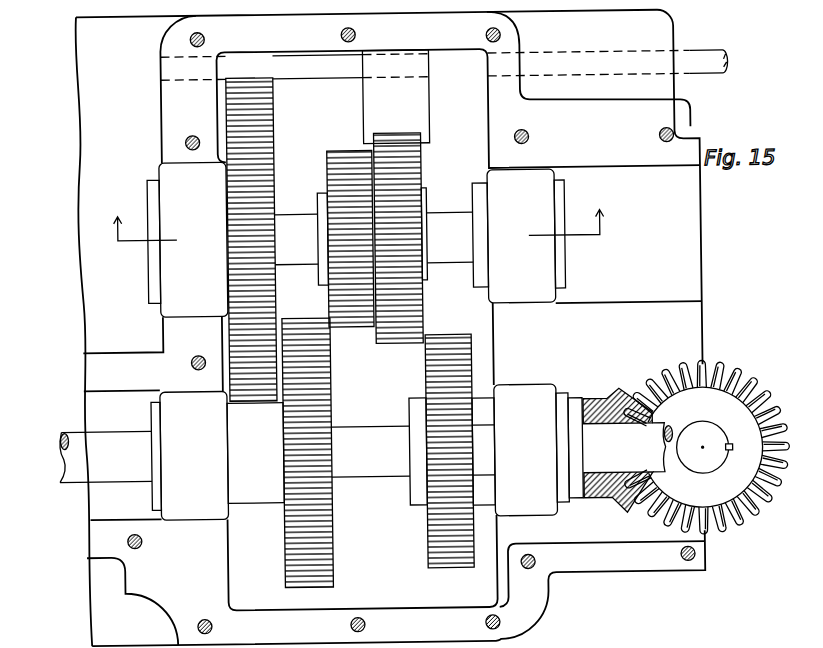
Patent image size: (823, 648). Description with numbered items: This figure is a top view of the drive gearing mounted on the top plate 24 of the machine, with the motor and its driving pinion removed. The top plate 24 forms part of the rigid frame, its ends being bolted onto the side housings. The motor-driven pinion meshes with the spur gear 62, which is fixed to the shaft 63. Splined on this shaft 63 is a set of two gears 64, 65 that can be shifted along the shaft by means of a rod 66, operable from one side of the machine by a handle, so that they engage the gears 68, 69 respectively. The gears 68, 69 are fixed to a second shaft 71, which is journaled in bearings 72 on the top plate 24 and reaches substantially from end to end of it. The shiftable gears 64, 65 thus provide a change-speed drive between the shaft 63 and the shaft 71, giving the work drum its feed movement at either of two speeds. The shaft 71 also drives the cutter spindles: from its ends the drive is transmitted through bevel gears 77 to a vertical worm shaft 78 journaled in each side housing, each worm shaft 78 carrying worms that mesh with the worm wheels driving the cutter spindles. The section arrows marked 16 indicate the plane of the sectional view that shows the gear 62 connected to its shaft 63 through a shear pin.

The section line of FIG. 16 is at (357, 236).
The top plate 24 is at (95, 543).
The spur gear 62 is at (246, 104).
The shaft 63 is at (294, 223).
The gear 64 is at (349, 156).
The gear 65 is at (394, 142).
The rod 66 is at (710, 62).
The gear 68 is at (322, 579).
The gear 69 is at (442, 568).
The shaft 71 is at (376, 470).
The bearings 72 is at (192, 505).
The bevel gears 77 is at (629, 391).
The vertical worm shaft 78 is at (706, 442).